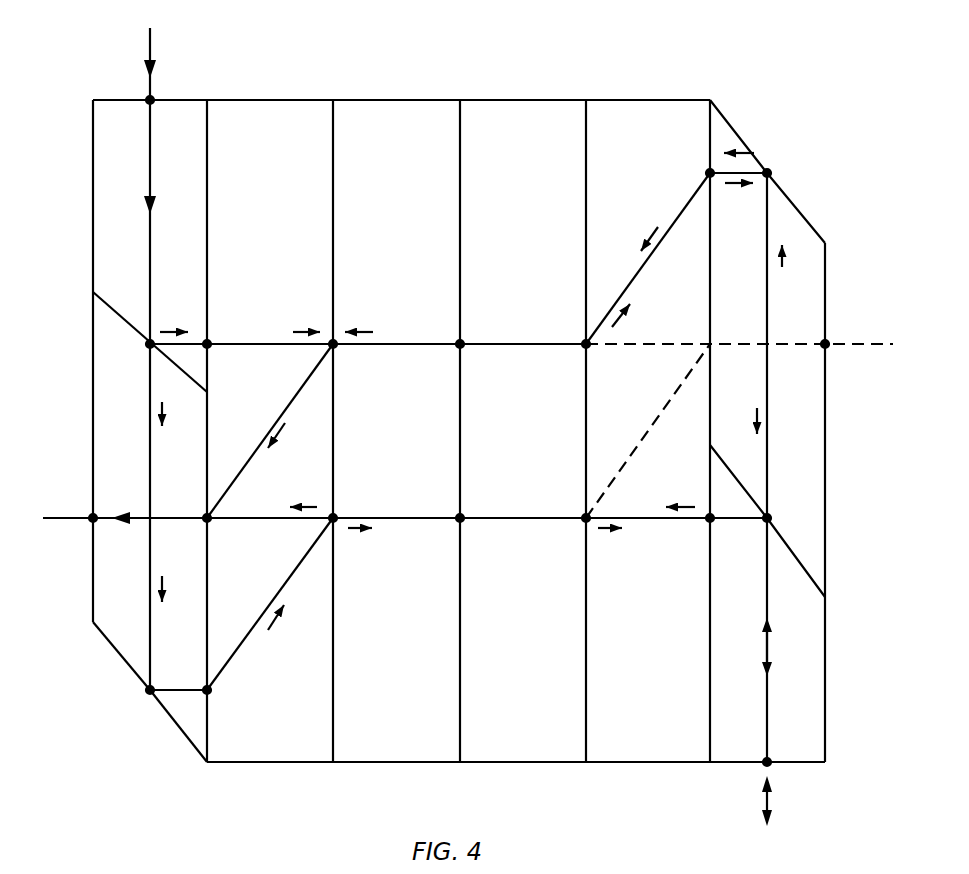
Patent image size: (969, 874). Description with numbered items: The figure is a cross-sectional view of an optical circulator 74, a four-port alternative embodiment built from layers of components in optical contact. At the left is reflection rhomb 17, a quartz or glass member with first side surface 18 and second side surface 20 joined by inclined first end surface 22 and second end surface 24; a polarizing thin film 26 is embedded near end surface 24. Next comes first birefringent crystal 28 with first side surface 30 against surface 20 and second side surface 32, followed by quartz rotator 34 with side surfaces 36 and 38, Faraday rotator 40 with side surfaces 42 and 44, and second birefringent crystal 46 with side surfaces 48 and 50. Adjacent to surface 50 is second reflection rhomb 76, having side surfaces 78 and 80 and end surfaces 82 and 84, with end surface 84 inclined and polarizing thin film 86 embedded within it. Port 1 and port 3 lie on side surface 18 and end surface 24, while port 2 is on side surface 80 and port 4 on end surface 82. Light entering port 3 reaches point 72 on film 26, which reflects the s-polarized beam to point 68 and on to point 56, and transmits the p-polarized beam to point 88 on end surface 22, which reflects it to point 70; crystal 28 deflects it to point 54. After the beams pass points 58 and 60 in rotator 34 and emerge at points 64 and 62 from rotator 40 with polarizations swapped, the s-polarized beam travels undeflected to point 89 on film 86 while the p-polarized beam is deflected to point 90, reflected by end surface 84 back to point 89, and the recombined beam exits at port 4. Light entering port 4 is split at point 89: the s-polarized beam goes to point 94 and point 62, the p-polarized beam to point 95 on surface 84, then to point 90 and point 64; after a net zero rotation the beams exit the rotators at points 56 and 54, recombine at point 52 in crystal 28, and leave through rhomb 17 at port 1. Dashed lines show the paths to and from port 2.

The port 1 is at (92, 516).
The port 2 is at (826, 342).
The port 3 is at (152, 98).
The port 4 is at (768, 760).
The reflection rhomb 17 is at (168, 264).
The first side surface 18 is at (93, 172).
The second side surface 20 is at (207, 762).
The first end surface 22 is at (112, 646).
The second end surface 24 is at (108, 100).
The polarizing thin film 26 is at (100, 302).
The first birefringent crystal 28 is at (262, 669).
The first side surface 30 is at (205, 108).
The second side surface 32 is at (335, 108).
The quartz rotator 34 is at (380, 669).
The first side surface 36 is at (333, 762).
The second side surface 38 is at (460, 762).
The Faraday rotator 40 is at (505, 669).
The first side surface 42 is at (458, 108).
The second side surface 44 is at (588, 108).
The second birefringent crystal 46 is at (635, 669).
The first side surface 48 is at (586, 762).
The second side surface 50 is at (710, 718).
The point 52 is at (208, 520).
The point 54 is at (334, 516).
The point 56 is at (334, 348).
The point 58 is at (458, 516).
The point 60 is at (462, 348).
The point 62 is at (584, 516).
The point 64 is at (586, 342).
The point 68 is at (208, 342).
The point 70 is at (208, 693).
The point 72 is at (150, 346).
The optical circulator 74 is at (400, 66).
The second reflection rhomb 76 is at (782, 476).
The first side surface 78 is at (710, 762).
The second side surface 80 is at (826, 666).
The first end surface 82 is at (812, 764).
The second end surface 84 is at (808, 205).
The polarizing thin film 86 is at (812, 582).
The point 88 is at (149, 693).
The point 89 is at (766, 521).
The point 90 is at (708, 172).
The point 94 is at (709, 521).
The point 95 is at (769, 172).